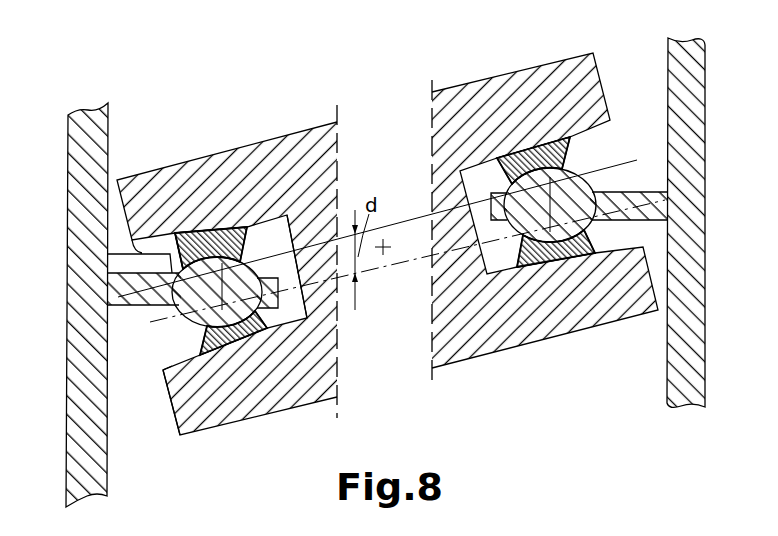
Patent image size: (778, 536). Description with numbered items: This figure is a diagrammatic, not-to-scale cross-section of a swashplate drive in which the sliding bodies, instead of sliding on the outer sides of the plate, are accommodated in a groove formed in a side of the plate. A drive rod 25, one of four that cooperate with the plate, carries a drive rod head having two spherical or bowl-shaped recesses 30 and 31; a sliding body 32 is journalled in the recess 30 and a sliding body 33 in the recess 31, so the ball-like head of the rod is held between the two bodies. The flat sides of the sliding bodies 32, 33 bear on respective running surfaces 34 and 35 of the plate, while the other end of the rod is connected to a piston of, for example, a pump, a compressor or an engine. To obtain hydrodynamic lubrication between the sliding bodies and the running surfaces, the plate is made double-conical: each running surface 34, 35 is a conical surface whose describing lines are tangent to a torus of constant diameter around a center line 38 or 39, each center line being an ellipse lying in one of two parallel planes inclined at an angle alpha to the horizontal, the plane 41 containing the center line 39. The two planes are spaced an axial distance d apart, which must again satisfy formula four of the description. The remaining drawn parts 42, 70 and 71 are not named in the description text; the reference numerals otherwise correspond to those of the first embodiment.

The drive rod 25 is at (82, 183).
The upper bearing block 42 is at (137, 218).
The running surface 34 is at (110, 254).
The shaft 70 is at (207, 290).
The running surface 35 is at (172, 366).
The plane 41 is at (177, 381).
The spherical or bowl-shaped recess 30 is at (195, 232).
The sliding body 32 is at (221, 231).
The center line 39 is at (247, 252).
The center line 38 is at (197, 325).
The sliding body 33 is at (181, 434).
The spherical or bowl-shaped recess 31 is at (239, 341).
The bearing housing 71 is at (310, 383).